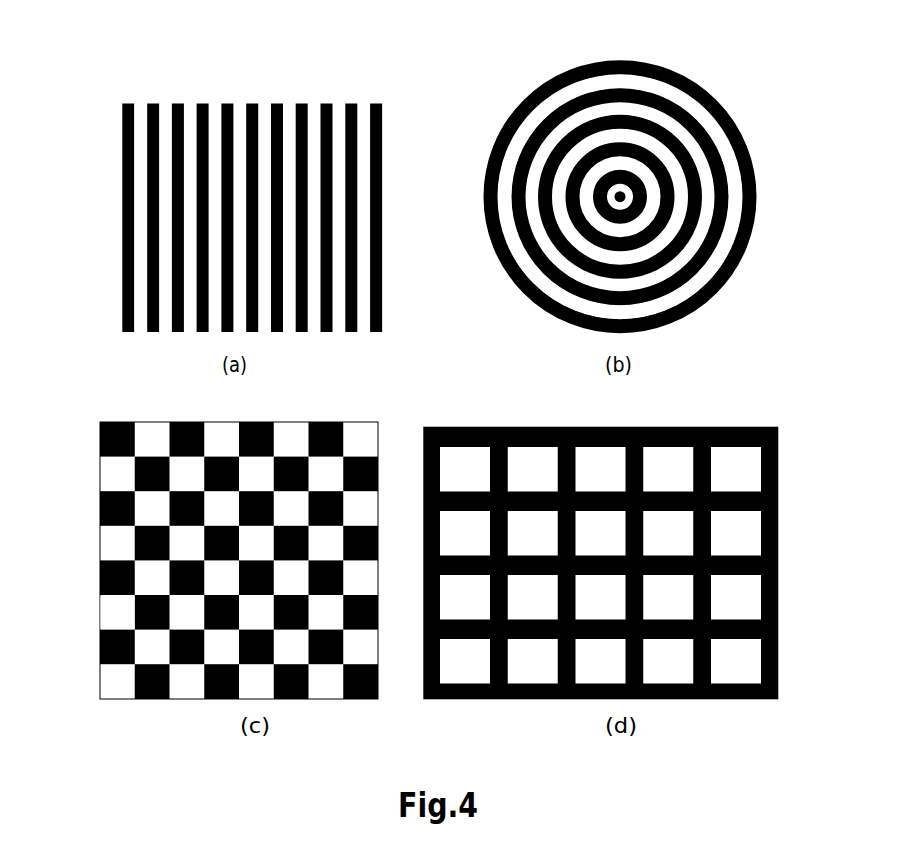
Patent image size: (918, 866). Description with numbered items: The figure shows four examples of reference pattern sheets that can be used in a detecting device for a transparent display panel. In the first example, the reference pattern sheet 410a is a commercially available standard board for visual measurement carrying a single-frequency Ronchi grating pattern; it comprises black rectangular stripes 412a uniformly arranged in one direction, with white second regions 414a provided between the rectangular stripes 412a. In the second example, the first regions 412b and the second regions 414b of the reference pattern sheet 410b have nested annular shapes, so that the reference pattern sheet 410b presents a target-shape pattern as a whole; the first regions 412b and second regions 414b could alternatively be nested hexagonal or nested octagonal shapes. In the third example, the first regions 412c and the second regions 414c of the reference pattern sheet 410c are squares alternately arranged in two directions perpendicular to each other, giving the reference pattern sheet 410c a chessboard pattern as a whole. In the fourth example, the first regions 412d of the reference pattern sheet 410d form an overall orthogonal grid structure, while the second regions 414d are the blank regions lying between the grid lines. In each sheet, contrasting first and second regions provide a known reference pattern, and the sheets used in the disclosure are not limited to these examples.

The reference pattern sheet 410a is at (209, 184).
The black rectangular stripes 412a is at (122, 152).
The white second regions 414a is at (142, 242).
The reference pattern sheet 410b is at (577, 181).
The first regions 412b is at (497, 137).
The second regions 414b is at (507, 223).
The reference pattern sheet 410c is at (198, 541).
The first regions 412c is at (100, 514).
The second regions 414c is at (122, 619).
The reference pattern sheet 410d is at (636, 541).
The first regions 412d is at (778, 469).
The second regions 414d is at (733, 604).